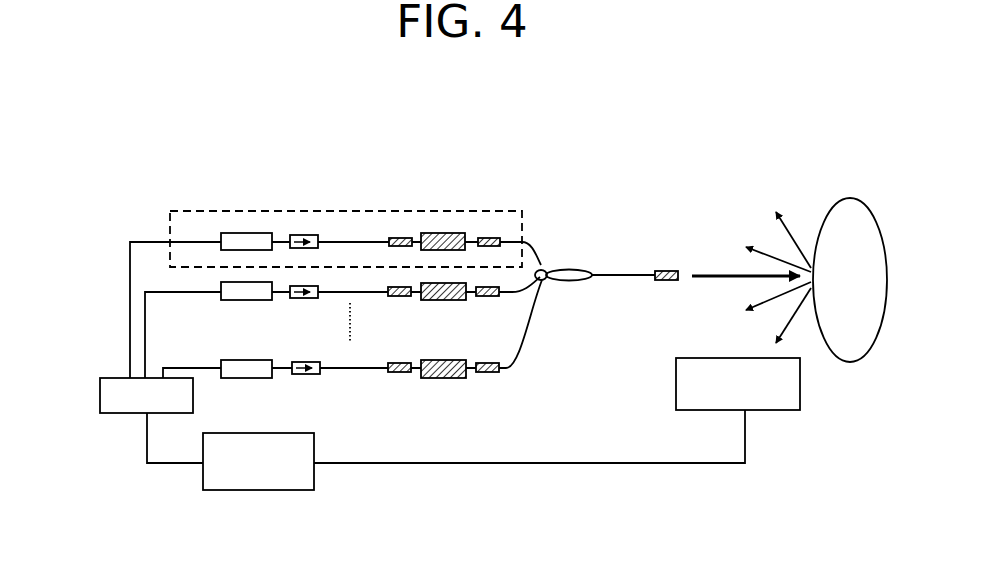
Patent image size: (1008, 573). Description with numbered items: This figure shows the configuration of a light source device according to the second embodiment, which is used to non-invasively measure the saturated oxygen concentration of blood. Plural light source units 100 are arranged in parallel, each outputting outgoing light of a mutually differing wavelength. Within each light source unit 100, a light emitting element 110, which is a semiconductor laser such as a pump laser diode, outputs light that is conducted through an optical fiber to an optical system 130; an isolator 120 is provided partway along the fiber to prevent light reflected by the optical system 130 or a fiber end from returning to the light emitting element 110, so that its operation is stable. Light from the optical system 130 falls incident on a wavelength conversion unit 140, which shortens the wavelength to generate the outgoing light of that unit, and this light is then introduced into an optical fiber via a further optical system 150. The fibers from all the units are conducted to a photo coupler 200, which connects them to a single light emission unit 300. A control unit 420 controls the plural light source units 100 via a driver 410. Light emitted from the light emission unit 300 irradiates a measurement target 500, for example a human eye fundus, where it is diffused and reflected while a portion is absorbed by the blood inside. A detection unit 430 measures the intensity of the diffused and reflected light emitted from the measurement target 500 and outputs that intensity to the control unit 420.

The light source unit 100 is at (170, 212).
The light emitting element 110 is at (241, 233).
The isolator 120 is at (307, 235).
The optical system 130 is at (400, 238).
The wavelength conversion unit 140 is at (443, 233).
The optical system 150 is at (490, 238).
The photo coupler 200 is at (567, 270).
The light emission unit 300 is at (670, 271).
The driver 410 is at (100, 391).
The control unit 420 is at (316, 453).
The detection unit 430 is at (768, 410).
The measurement target 500 is at (851, 197).